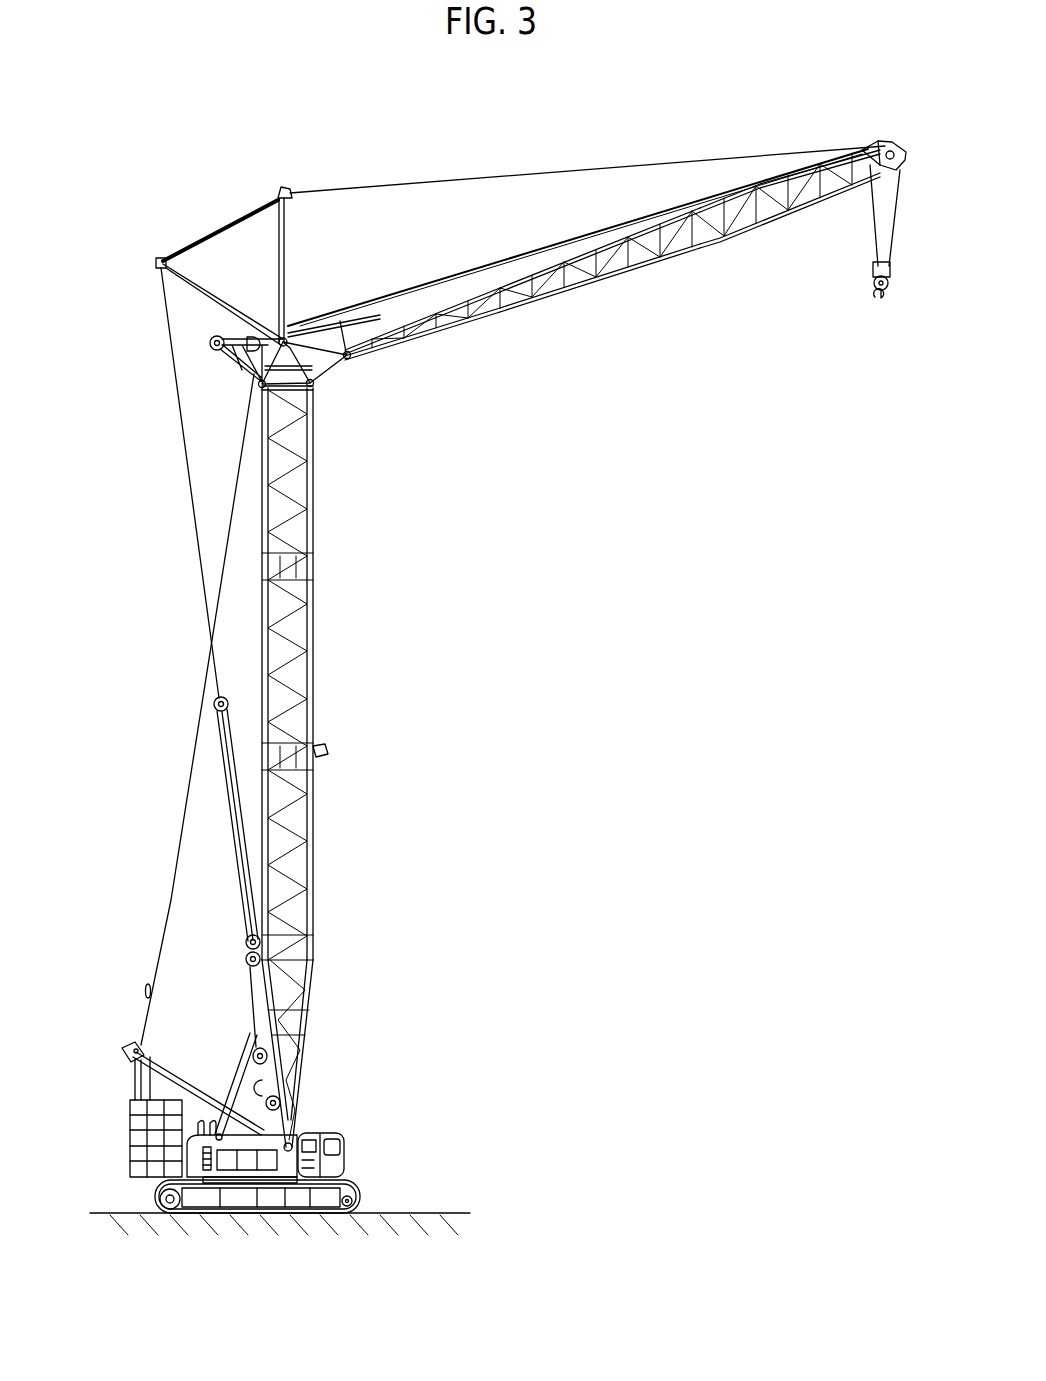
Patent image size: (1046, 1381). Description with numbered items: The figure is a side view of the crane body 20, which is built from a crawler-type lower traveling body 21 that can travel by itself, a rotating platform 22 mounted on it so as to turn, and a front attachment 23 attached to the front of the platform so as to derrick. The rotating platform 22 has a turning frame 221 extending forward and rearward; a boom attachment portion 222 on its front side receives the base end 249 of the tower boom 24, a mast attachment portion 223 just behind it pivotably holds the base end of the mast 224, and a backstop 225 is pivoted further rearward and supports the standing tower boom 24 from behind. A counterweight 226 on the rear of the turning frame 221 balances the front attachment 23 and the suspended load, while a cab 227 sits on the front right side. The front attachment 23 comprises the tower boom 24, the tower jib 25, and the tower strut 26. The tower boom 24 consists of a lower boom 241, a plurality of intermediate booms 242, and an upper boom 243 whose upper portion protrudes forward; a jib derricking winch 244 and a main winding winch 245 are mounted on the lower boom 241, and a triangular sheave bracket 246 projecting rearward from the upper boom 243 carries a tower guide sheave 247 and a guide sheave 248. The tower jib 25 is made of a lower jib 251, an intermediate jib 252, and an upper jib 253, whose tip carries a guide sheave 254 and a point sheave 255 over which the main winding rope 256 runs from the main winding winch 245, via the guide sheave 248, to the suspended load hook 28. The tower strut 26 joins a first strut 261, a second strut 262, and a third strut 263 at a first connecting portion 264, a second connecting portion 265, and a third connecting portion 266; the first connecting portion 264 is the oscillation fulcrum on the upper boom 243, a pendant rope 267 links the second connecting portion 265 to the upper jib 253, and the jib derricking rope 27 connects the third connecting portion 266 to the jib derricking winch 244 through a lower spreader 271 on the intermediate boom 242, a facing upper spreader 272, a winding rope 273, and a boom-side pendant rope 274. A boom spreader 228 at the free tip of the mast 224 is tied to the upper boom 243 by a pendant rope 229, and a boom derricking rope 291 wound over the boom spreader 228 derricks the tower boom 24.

The crane body 20 is at (737, 904).
The lower traveling body 21 is at (242, 1184).
The rotating platform 22 is at (428, 1135).
The front attachment 23 is at (554, 537).
The tower boom 24 is at (437, 628).
The tower jib 25 is at (637, 340).
The tower strut 26 is at (160, 162).
The jib derricking rope 27 is at (212, 730).
The suspended load hook 28 is at (872, 290).
The turning frame 221 is at (175, 1208).
The boom attachment portion 222 is at (303, 1180).
The mast attachment portion 223 is at (262, 1170).
The mast 224 is at (170, 1063).
The backstop 225 is at (240, 1090).
The counterweight 226 is at (128, 1127).
The cab 227 is at (347, 1140).
The boom spreader 228 is at (132, 1045).
The pendant rope 229 is at (157, 935).
The lower boom 241 is at (313, 1025).
The intermediate boom 242 is at (317, 478).
The upper boom 243 is at (335, 365).
The jib derricking winch 244 is at (230, 1172).
The main winding winch 245 is at (252, 1045).
The sheave bracket 246 is at (240, 372).
The tower guide sheave 247 is at (219, 350).
The guide sheave 248 is at (252, 335).
The base end 249 is at (292, 1144).
The lower jib 251 is at (477, 323).
The intermediate jib 252 is at (630, 270).
The upper jib 253 is at (796, 210).
The guide sheave 254 is at (890, 140).
The point sheave 255 is at (900, 195).
The main winding rope 256 is at (433, 283).
The first strut 261 is at (200, 298).
The second strut 262 is at (287, 230).
The third strut 263 is at (226, 222).
The first connecting portion 264 is at (290, 333).
The second connecting portion 265 is at (278, 196).
The third connecting portion 266 is at (160, 258).
The pendant rope 267 is at (512, 178).
The lower spreader 271 is at (250, 935).
The upper spreader 272 is at (215, 700).
The winding rope 273 is at (222, 825).
The boom-side pendant rope 274 is at (190, 500).
The boom derricking rope 291 is at (138, 1077).